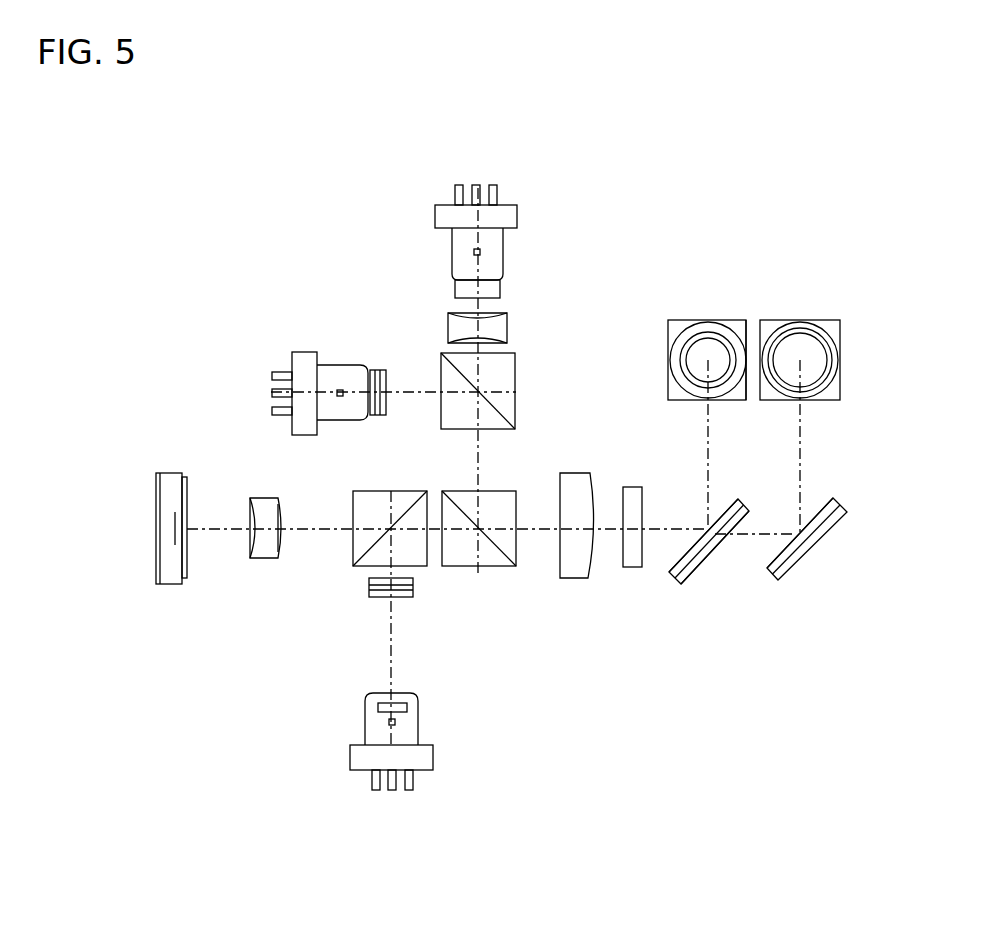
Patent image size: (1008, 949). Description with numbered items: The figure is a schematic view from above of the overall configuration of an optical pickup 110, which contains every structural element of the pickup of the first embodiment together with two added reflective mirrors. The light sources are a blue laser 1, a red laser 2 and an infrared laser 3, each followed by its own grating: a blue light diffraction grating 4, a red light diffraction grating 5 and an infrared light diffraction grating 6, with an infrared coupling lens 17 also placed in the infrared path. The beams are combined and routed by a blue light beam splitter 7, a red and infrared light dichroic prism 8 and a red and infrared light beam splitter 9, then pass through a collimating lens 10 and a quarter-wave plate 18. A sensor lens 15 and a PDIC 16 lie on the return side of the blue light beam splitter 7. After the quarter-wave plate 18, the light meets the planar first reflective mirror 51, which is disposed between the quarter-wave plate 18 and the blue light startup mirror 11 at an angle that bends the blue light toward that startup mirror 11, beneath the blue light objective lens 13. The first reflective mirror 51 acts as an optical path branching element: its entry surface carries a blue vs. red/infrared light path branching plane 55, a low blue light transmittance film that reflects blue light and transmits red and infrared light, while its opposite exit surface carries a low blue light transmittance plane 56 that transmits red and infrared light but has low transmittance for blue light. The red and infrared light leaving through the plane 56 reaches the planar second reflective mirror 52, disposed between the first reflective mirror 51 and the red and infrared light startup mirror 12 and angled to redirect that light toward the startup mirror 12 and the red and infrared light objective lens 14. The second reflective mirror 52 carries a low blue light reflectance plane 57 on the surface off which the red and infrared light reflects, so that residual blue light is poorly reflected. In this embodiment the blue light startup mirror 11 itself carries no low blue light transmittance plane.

The optical pickup 110 is at (731, 179).
The blue laser 1 is at (433, 758).
The red laser 2 is at (304, 357).
The infrared laser 3 is at (512, 215).
The blue light diffraction grating 4 is at (372, 590).
The red light diffraction grating 5 is at (381, 370).
The infrared light diffraction grating 6 is at (500, 290).
The blue light beam splitter 7 is at (352, 543).
The red and infrared light dichroic prism 8 is at (503, 398).
The red and infrared light beam splitter 9 is at (478, 567).
The collimating lens 10 is at (575, 578).
The blue light startup mirror 11 is at (680, 403).
The red and infrared light startup mirror 12 is at (835, 403).
The blue light objective lens 13 is at (720, 328).
The red and infrared light objective lens 14 is at (815, 328).
The sensor lens 15 is at (265, 560).
The PDIC 16 is at (171, 585).
The infrared coupling lens 17 is at (498, 328).
The quarter-wave plate 18 is at (632, 567).
The first reflective mirror 51 is at (700, 555).
The second reflective mirror 52 is at (795, 555).
The blue vs. red/infrared light path branching plane 55 is at (740, 498).
The low blue light transmittance plane 56 is at (710, 548).
The low blue light reflectance plane 57 is at (838, 498).